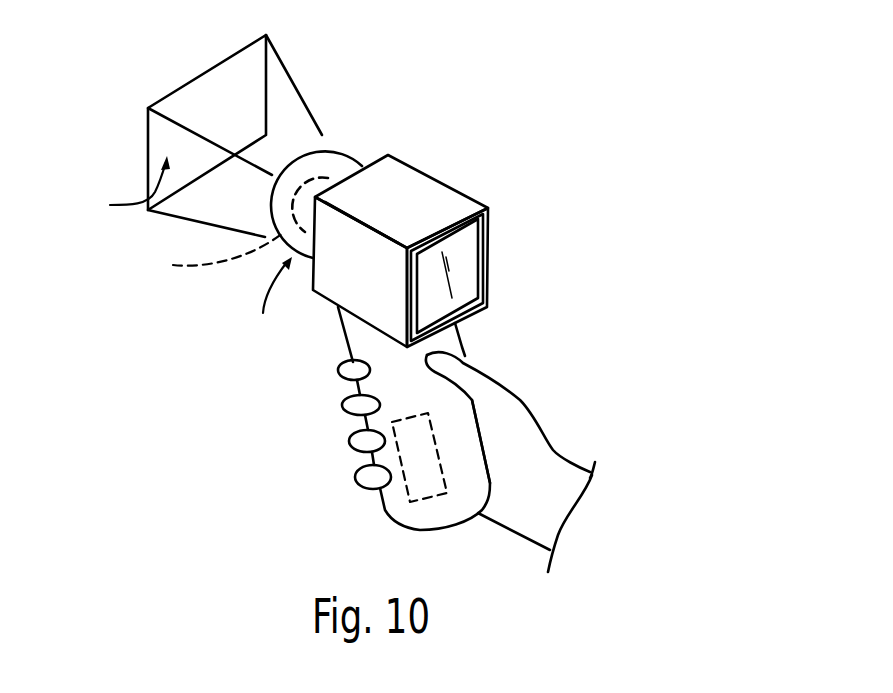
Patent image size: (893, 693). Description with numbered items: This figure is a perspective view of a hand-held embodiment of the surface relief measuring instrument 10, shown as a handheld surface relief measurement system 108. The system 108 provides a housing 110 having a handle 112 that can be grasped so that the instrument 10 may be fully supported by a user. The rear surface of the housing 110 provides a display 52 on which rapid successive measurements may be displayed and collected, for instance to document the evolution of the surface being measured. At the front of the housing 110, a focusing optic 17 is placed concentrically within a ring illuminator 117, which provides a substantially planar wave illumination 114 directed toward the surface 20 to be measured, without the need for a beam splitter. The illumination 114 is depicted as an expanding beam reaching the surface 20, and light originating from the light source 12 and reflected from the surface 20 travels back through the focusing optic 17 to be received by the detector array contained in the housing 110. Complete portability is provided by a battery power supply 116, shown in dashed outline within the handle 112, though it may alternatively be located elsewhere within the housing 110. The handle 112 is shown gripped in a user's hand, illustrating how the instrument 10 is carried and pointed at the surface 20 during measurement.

The surface relief measuring instrument 10 is at (465, 85).
The handheld surface relief measurement system 108 is at (471, 148).
The housing 110 is at (462, 193).
The display 52 is at (470, 267).
The planar wave illumination 114 is at (287, 103).
The ring illuminator 117 is at (345, 162).
The surface to be measured 20 is at (126, 188).
The focusing optic 17 is at (213, 258).
The light source 12 is at (273, 300).
The battery power supply 116 is at (420, 455).
The handle 112 is at (417, 518).